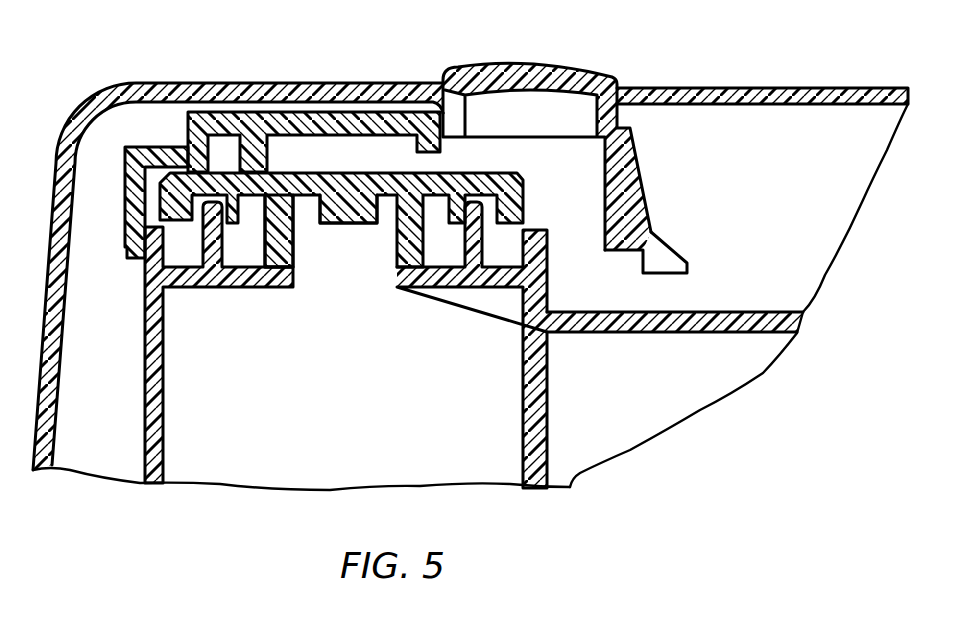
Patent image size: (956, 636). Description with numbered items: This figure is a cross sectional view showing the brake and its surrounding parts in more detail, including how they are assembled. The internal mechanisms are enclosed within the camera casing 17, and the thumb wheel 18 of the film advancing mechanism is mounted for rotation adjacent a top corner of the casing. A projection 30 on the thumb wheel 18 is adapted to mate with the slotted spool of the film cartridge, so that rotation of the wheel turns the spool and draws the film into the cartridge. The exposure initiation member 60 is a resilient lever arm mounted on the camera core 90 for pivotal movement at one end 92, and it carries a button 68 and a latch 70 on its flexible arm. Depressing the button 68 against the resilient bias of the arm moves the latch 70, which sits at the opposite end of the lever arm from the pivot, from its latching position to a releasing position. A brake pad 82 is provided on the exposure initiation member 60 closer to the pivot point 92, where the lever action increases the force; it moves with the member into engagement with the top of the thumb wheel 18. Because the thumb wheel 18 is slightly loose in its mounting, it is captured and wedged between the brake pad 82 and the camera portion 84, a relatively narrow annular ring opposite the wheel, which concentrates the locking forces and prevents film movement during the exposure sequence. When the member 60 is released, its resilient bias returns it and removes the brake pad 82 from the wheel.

The camera casing 17 is at (847, 88).
The thumb wheel 18 is at (388, 183).
The projection 30 is at (362, 225).
The exposure initiation member 60 is at (340, 123).
The button 68 is at (557, 76).
The latch 70 is at (663, 257).
The brake pad 82 is at (262, 150).
The portion of the camera structure 84 is at (296, 226).
The camera core 90 is at (148, 365).
The pivot end 92 is at (133, 188).